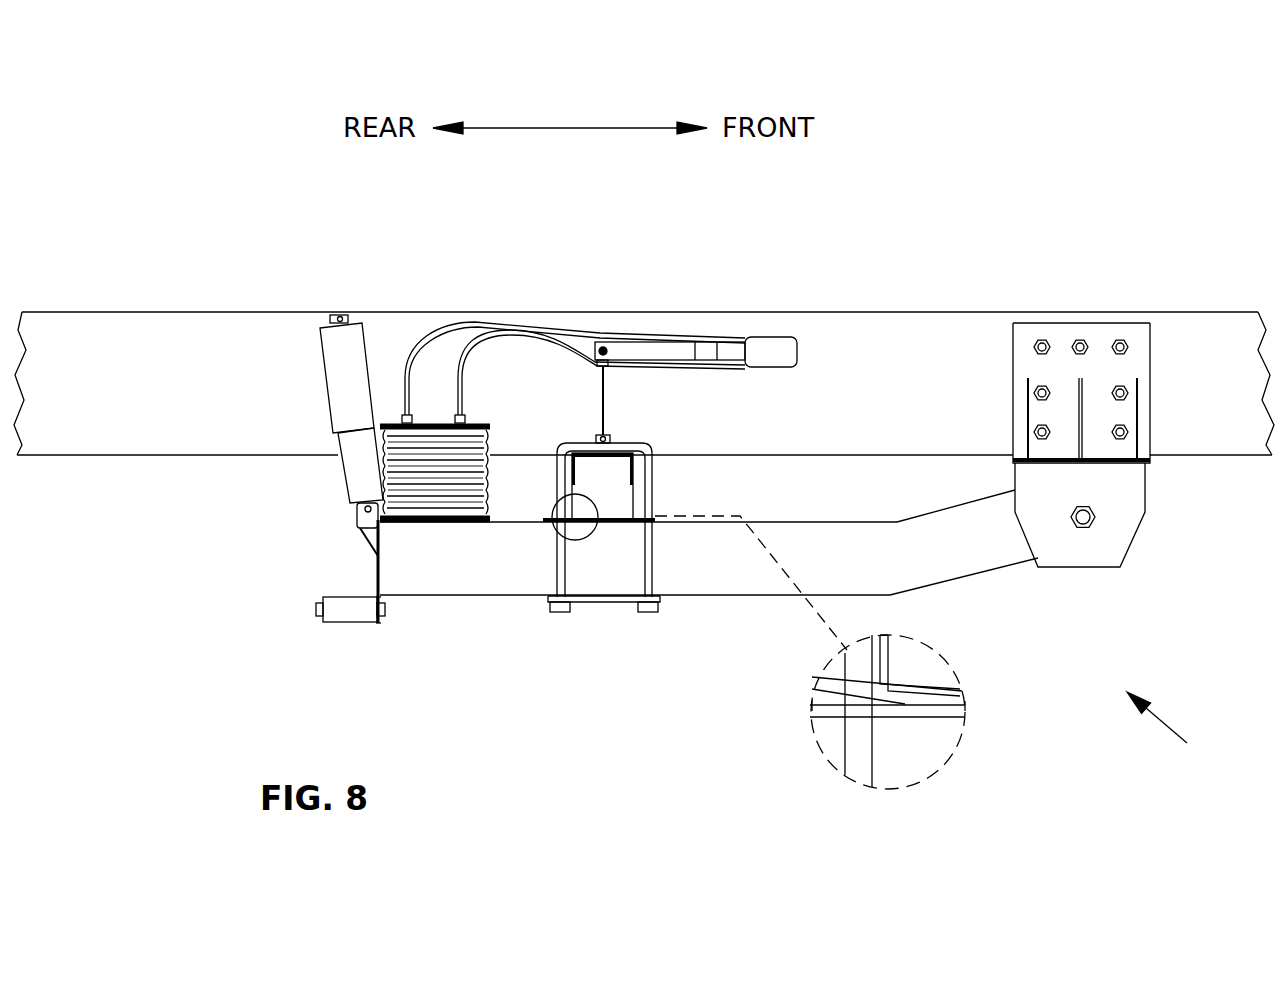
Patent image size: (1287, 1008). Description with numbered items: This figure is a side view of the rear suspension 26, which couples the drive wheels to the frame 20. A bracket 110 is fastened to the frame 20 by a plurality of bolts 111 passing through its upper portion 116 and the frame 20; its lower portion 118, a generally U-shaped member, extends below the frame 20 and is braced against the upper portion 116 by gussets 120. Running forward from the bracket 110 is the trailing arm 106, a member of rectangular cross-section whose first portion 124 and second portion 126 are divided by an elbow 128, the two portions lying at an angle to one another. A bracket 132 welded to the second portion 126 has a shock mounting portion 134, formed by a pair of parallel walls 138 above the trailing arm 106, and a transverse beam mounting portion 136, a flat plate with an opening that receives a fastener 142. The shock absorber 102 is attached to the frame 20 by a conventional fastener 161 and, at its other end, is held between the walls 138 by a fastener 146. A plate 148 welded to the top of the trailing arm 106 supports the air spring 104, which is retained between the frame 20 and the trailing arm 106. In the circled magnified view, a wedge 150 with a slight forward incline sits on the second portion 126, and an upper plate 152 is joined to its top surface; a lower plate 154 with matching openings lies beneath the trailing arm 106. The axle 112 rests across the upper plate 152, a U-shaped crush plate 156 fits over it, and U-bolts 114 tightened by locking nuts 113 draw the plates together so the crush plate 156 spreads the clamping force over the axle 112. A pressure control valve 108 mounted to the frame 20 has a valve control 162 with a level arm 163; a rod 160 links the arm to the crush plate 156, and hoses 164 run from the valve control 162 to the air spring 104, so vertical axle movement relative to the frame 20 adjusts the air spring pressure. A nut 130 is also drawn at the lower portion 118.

The frame 20 is at (75, 327).
The rear suspension 26 is at (1168, 734).
The shock absorber 102 is at (345, 391).
The air spring 104 is at (447, 503).
The trailing arm 106 is at (720, 565).
The pressure control valve 108 is at (770, 347).
The bracket 110 is at (1060, 332).
The bolts 111 is at (1040, 428).
The axle 112 is at (633, 500).
The locking nuts 113 is at (570, 606).
The U-bolts 114 is at (562, 567).
The upper portion 116 is at (1103, 333).
The lower portion 118 is at (1127, 522).
The gussets 120 is at (1082, 412).
The first portion 124 is at (943, 565).
The second portion 126 is at (497, 572).
The elbow 128 is at (897, 522).
The pivot bolt 130 is at (1077, 528).
The bracket 132 is at (377, 580).
The shock mounting portion 134 is at (365, 534).
The transverse beam mounting portion 136 is at (383, 598).
The walls 138 is at (362, 520).
The fastener 142 is at (312, 607).
The fastener 146 is at (368, 500).
The plate 148 is at (443, 505).
The wedge 150 is at (573, 535).
The upper plate 152 is at (621, 522).
The lower plate 154 is at (627, 598).
The crush plate 156 is at (635, 462).
The rod 160 is at (604, 398).
The fastener 161 is at (342, 313).
The valve control 162 is at (797, 351).
The level arm 163 is at (680, 350).
The hoses 164 is at (458, 328).